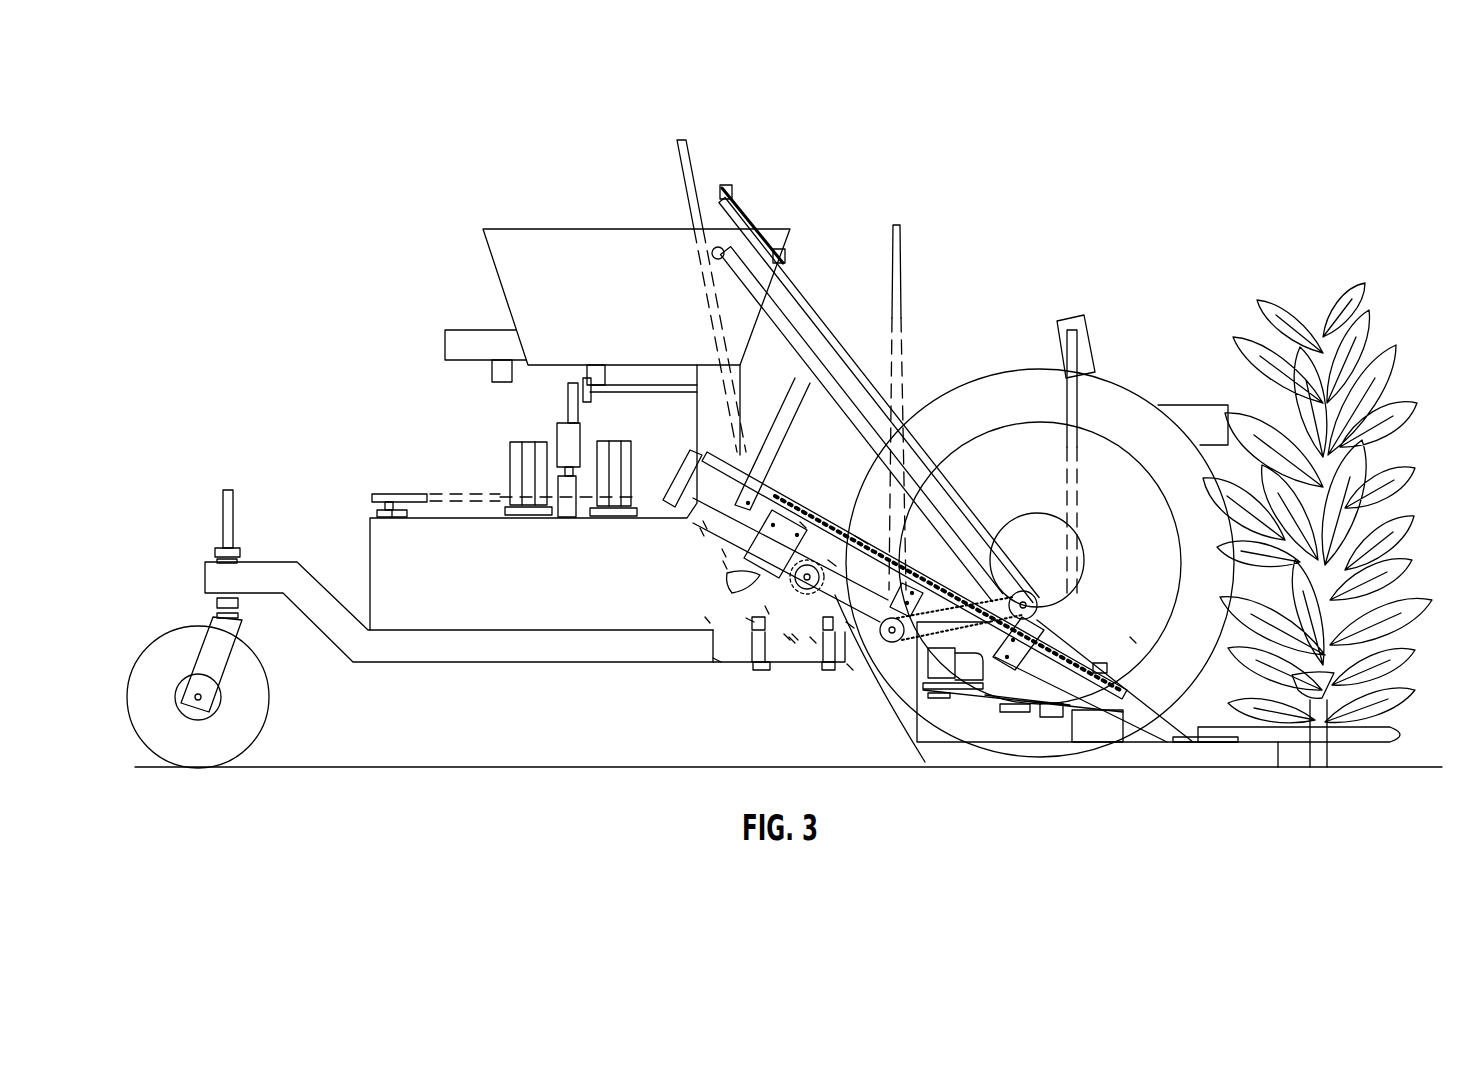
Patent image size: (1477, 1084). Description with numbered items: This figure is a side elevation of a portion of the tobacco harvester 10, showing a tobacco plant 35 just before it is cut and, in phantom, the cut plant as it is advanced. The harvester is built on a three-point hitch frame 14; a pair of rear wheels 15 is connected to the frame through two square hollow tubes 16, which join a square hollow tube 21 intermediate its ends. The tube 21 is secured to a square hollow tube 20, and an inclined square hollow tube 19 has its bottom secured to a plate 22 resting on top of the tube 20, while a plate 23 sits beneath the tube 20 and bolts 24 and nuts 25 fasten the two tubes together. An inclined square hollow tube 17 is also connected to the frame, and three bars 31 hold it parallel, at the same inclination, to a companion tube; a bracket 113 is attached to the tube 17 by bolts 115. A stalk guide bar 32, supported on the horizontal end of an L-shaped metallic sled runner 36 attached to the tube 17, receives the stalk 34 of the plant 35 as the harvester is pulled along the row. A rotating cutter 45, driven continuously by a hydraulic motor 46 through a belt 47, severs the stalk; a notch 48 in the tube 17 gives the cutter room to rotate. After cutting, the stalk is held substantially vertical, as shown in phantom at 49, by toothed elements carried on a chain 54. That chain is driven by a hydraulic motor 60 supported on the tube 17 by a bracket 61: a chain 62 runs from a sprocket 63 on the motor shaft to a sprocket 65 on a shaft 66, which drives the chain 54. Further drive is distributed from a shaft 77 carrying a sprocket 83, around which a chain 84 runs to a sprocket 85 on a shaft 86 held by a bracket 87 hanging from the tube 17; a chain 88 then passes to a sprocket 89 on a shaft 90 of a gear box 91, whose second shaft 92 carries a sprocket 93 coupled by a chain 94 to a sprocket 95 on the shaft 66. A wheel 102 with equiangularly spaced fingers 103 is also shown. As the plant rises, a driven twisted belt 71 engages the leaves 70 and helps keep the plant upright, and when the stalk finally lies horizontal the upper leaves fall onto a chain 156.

The tobacco harvester 10 is at (463, 450).
The three point hitch frame 14 is at (458, 662).
The rear wheels 15 is at (270, 700).
The square hollow tubes 16 is at (393, 662).
The square hollow tube 17 is at (1157, 717).
The inclined square hollow tube 19 is at (767, 610).
The square hollow tube 20 is at (850, 667).
The square hollow tube 21 is at (717, 660).
The plate 22 is at (707, 620).
The plate 23 is at (792, 640).
The bolts 24 is at (825, 673).
The nuts 25 is at (750, 620).
The bars 31 is at (790, 500).
The stalk guide bar 32 is at (1278, 767).
The stalk 34 is at (1328, 753).
The tobacco plant 35 is at (1410, 491).
The L-shaped metallic sled runner 36 is at (927, 743).
The rotating cutter 45 is at (1133, 640).
The hydraulic motor 46 is at (927, 670).
The belt 47 is at (1037, 592).
The notch 48 is at (1120, 728).
The phantom vertical stalk position 49 is at (1080, 408).
The chain 54 is at (1088, 660).
The hydraulic motor 60 is at (747, 600).
The bracket 61 is at (803, 525).
The chain 62 is at (755, 525).
The sprocket 63 is at (722, 553).
The sprocket 65 is at (703, 525).
The shaft 66 is at (700, 532).
The leaves 70 is at (1407, 574).
The twisted belt 71 is at (743, 287).
The shaft 77 is at (1040, 520).
The sprocket 83 is at (1072, 612).
The chain 84 is at (932, 596).
The sprocket 85 is at (893, 642).
The shaft 86 is at (850, 625).
The bracket 87 is at (907, 580).
The chain 88 is at (862, 540).
The sprocket 89 is at (812, 576).
The shaft 90 is at (832, 563).
The gear box 91 is at (813, 640).
The second shaft 92 is at (787, 637).
The sprocket 93 is at (795, 637).
The chain 94 is at (723, 565).
The sprocket 95 is at (720, 537).
The wheel 102 is at (748, 215).
The fingers 103 is at (727, 192).
The bracket 113 is at (806, 350).
The bolts 115 is at (740, 500).
The chain 156 is at (378, 503).